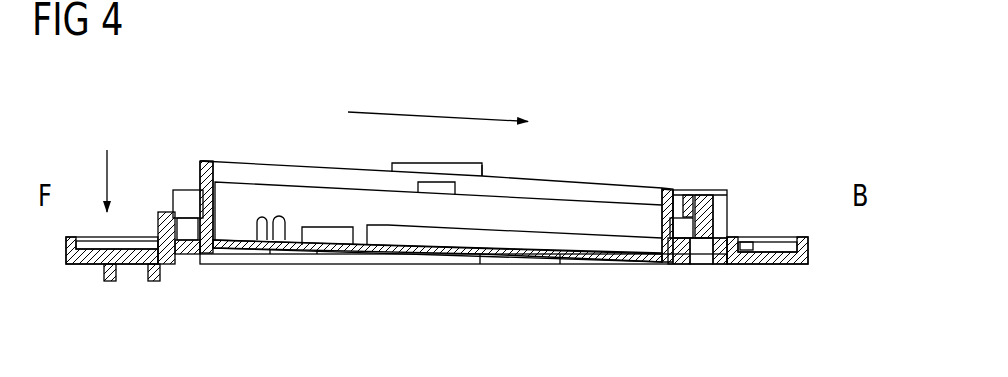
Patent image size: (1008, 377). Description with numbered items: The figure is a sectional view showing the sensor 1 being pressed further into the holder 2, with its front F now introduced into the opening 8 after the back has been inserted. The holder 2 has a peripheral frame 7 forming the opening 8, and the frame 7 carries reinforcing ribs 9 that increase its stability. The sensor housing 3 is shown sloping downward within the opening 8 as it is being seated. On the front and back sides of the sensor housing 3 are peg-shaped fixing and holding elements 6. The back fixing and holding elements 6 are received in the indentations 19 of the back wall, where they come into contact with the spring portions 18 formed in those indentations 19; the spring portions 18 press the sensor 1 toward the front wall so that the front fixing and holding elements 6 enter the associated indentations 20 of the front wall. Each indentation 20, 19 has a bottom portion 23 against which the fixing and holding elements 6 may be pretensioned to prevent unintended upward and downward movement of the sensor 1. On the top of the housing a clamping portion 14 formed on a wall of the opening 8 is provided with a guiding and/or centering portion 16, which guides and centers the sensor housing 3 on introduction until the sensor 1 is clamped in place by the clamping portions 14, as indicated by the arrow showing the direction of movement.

The sensor 1 is at (608, 150).
The holder 2 is at (816, 254).
The sensor housing 3 is at (620, 217).
The fixing and holding elements 6 is at (185, 200).
The frame 7 is at (71, 270).
The opening 8 is at (280, 268).
The reinforcing ribs 9 is at (153, 282).
The clamping portion 14 is at (397, 166).
The guiding and/or centering portion 16 is at (492, 166).
The spring portion 18 is at (713, 208).
The indentation 19 is at (690, 192).
The indentation 20 is at (170, 208).
The bottom portion 23 is at (190, 252).